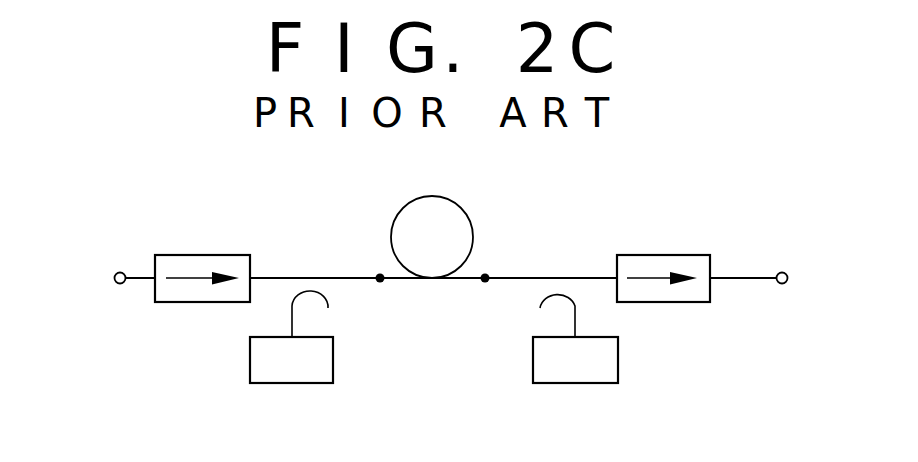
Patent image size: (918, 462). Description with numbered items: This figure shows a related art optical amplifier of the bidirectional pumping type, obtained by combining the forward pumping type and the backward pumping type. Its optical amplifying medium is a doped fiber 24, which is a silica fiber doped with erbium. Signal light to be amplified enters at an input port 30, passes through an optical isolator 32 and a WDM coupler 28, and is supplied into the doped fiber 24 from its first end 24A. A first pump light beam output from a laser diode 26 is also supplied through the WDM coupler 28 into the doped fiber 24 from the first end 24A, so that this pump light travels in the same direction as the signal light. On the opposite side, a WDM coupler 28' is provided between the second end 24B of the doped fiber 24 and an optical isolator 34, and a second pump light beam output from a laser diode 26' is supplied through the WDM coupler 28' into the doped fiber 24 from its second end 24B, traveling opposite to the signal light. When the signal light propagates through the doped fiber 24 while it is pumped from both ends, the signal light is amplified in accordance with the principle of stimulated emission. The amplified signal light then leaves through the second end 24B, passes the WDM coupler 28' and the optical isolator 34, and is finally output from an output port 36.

The doped fiber 24 is at (466, 212).
The first end 24A is at (380, 284).
The second end 24B is at (485, 284).
The laser diode 26 is at (310, 359).
The laser diode 26' is at (599, 361).
The WDM coupler 28 is at (315, 230).
The WDM coupler 28' is at (553, 238).
The input port 30 is at (119, 271).
The optical isolator 32 is at (225, 302).
The optical isolator 34 is at (632, 302).
The output port 36 is at (783, 272).